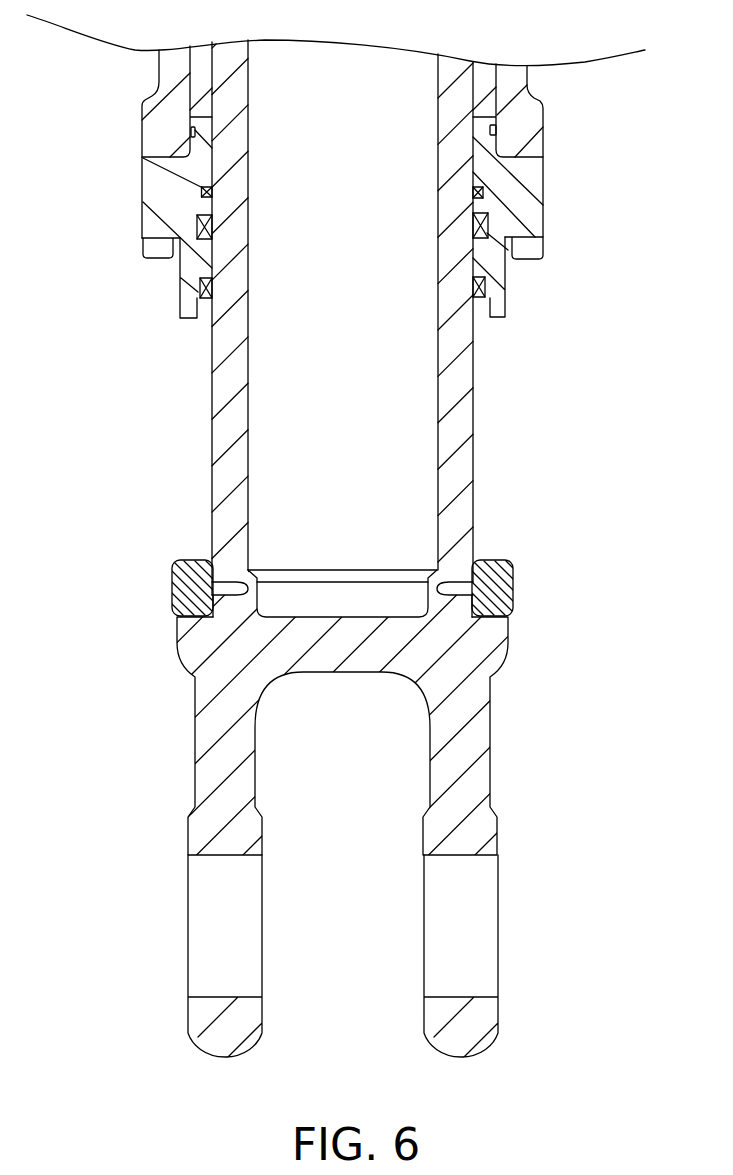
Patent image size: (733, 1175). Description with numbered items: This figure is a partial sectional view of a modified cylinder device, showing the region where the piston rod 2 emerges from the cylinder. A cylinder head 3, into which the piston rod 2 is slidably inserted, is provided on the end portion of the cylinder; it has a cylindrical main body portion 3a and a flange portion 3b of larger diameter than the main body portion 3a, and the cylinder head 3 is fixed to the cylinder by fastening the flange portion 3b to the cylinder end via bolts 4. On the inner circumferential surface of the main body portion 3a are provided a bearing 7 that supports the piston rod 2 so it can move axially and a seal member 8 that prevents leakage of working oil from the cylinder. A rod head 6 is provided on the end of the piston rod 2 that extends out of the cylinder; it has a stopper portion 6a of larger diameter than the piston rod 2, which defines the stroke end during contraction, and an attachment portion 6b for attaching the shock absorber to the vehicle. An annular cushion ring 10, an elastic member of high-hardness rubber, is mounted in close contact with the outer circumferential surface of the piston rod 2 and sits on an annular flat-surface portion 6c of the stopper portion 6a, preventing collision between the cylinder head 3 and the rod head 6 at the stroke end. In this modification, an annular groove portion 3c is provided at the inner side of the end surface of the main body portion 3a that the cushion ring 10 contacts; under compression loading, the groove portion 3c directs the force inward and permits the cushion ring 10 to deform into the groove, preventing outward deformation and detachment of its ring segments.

The piston rod 2 is at (458, 429).
The cylinder head 3 is at (562, 163).
The main body portion 3a is at (486, 278).
The flange portion 3b is at (527, 202).
The annular groove portion 3c is at (197, 302).
The bolts 4 is at (533, 250).
The rod head 6 is at (453, 657).
The stopper portion 6a is at (495, 626).
The attachment portion 6b is at (458, 855).
The annular flat-surface portion 6c is at (172, 591).
The bearing 7 is at (197, 222).
The seal 8 is at (197, 287).
The cushion ring 10 is at (190, 573).